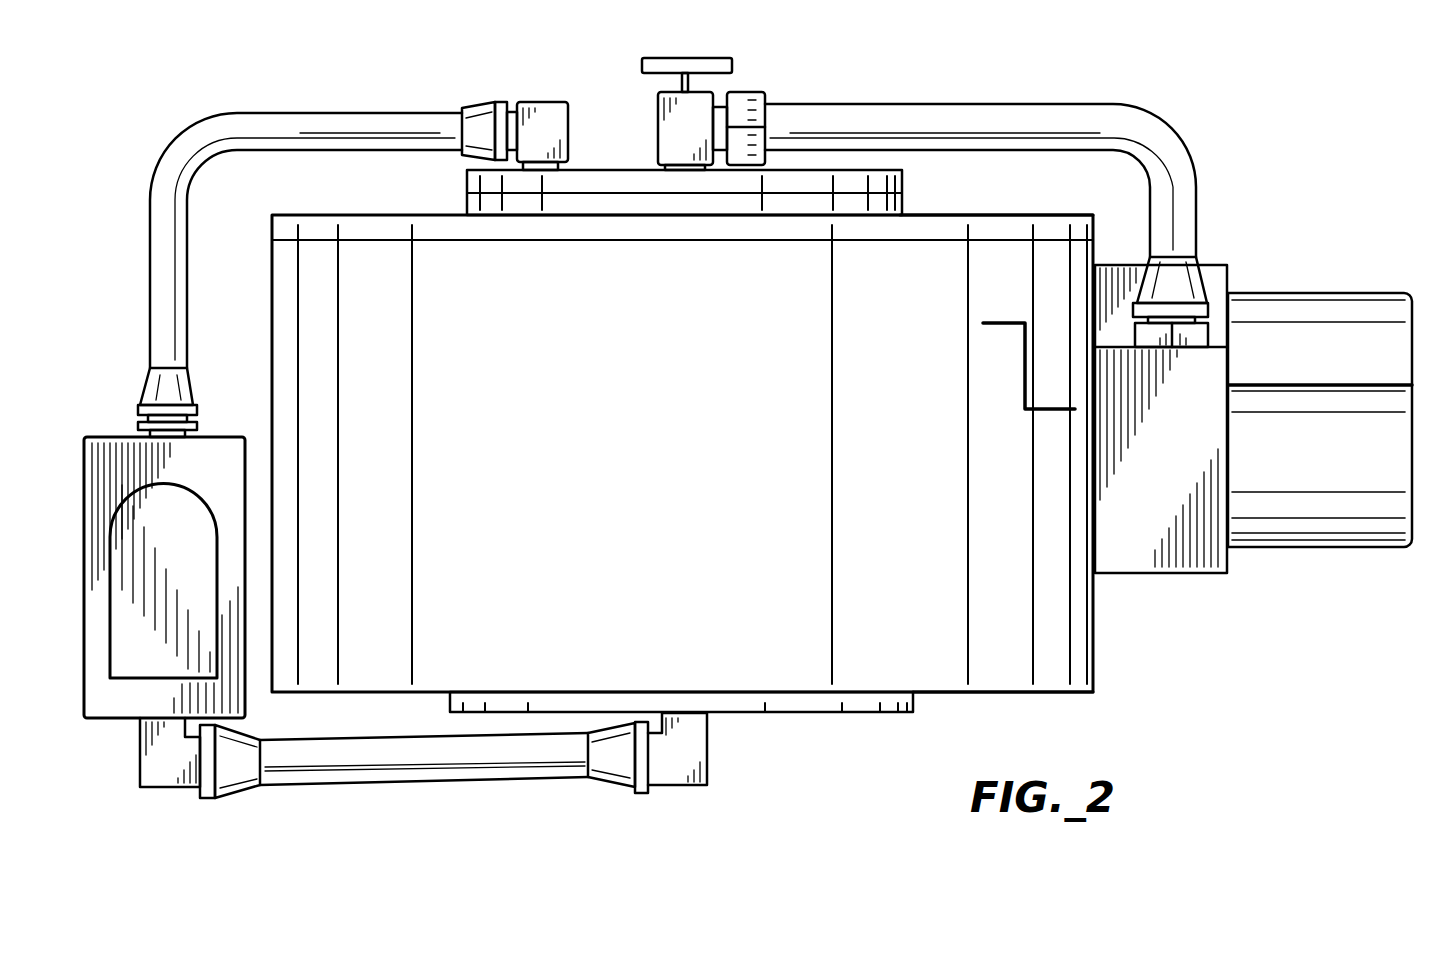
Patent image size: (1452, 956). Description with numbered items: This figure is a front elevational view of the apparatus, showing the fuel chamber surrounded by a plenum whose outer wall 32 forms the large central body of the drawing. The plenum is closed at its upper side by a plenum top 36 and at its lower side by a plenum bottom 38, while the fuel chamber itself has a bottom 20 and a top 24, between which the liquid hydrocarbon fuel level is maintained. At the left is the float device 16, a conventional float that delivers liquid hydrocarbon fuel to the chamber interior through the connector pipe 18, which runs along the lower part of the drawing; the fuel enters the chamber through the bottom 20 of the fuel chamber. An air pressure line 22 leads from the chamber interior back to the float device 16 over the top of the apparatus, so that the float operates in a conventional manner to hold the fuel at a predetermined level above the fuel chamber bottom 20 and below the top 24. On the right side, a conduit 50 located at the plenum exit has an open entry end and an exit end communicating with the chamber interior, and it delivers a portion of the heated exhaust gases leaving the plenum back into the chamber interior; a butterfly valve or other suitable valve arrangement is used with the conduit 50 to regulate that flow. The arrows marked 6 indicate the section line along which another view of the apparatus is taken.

The float device 16 is at (132, 720).
The connector pipe 18 is at (412, 783).
The bottom of the fuel chamber 20 is at (785, 713).
The air pressure line 22 is at (312, 113).
The top of the fuel chamber 24 is at (903, 178).
The outer wall 32 is at (1095, 633).
The plenum top 36 is at (1037, 210).
The plenum bottom 38 is at (997, 692).
The conduit 50 is at (1002, 103).
The section line 6- 6 is at (128, 327).